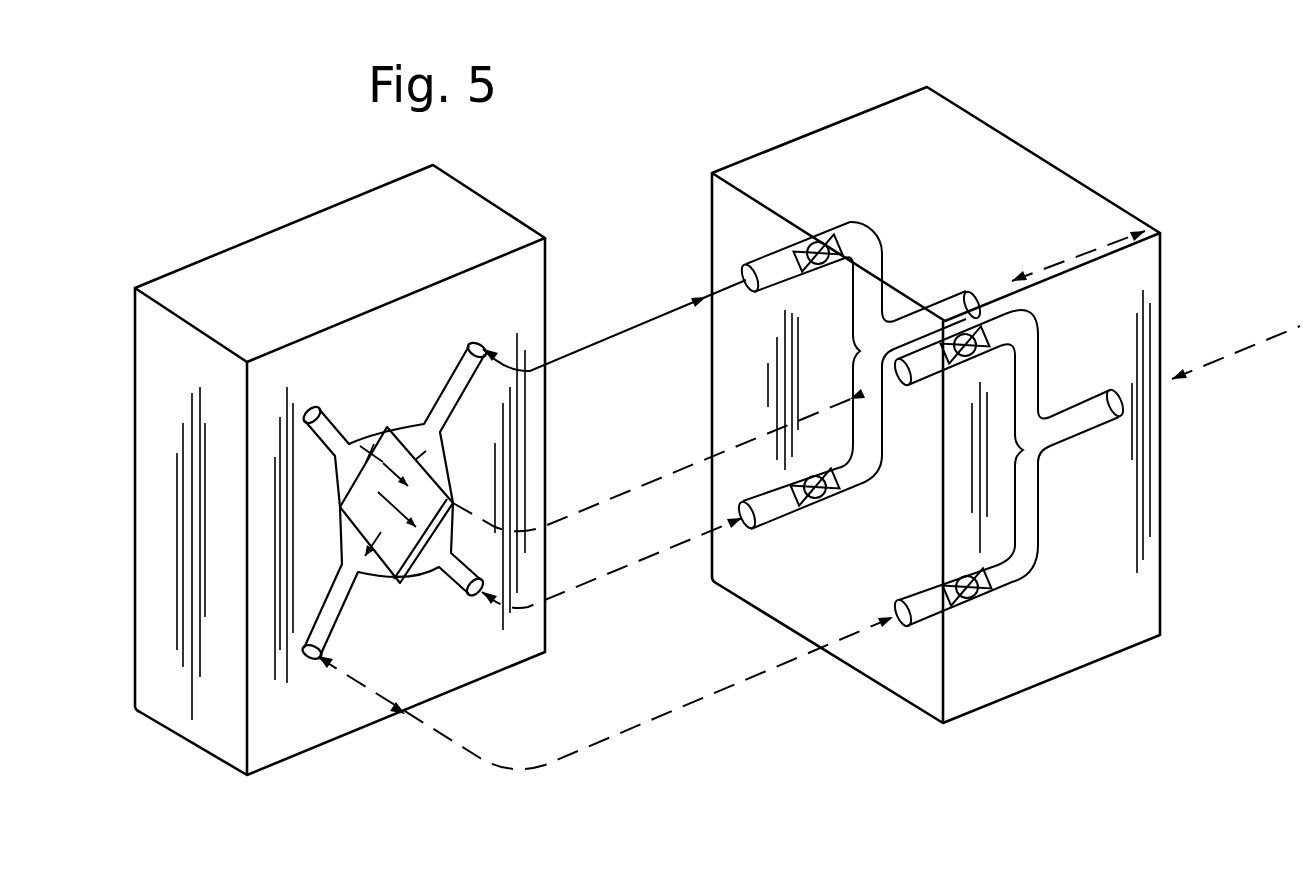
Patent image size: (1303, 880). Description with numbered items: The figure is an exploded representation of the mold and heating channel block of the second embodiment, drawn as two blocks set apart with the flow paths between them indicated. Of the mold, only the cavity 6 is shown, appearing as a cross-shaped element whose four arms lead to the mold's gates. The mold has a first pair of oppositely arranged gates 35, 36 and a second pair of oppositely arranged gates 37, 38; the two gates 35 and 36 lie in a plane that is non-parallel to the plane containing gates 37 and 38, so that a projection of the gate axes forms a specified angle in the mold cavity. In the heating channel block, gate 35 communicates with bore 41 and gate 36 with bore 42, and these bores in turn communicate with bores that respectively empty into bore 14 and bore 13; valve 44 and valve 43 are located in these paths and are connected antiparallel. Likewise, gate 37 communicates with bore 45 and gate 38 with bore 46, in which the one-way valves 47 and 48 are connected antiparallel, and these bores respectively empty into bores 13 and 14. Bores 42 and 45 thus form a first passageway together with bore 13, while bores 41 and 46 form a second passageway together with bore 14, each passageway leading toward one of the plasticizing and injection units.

The cavity 6 is at (342, 510).
The bore 13 is at (1117, 412).
The bore 14 is at (952, 298).
The gate 35 is at (775, 510).
The gate 36 is at (918, 358).
The gate 37 is at (905, 622).
The gate 38 is at (767, 265).
The bore 41 is at (866, 423).
The bore 42 is at (1028, 395).
The valve 43 is at (1010, 304).
The valve 44 is at (815, 498).
The bore 45 is at (1027, 520).
The bore 46 is at (867, 260).
The one-way valve 47 is at (980, 603).
The one-way valve 48 is at (818, 248).